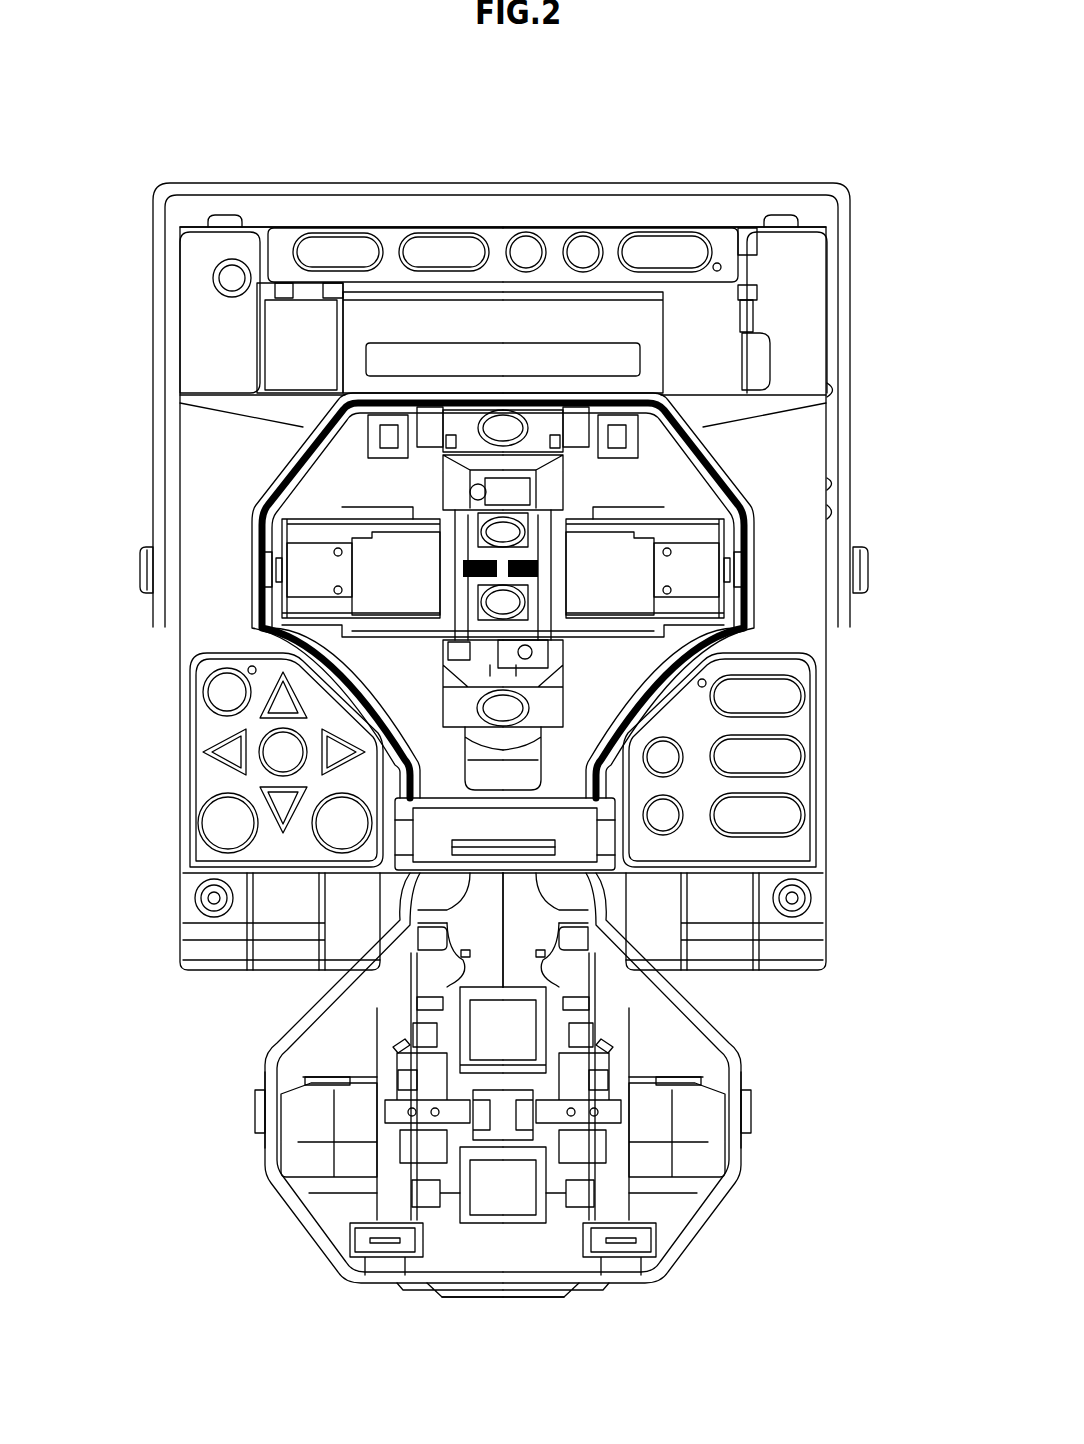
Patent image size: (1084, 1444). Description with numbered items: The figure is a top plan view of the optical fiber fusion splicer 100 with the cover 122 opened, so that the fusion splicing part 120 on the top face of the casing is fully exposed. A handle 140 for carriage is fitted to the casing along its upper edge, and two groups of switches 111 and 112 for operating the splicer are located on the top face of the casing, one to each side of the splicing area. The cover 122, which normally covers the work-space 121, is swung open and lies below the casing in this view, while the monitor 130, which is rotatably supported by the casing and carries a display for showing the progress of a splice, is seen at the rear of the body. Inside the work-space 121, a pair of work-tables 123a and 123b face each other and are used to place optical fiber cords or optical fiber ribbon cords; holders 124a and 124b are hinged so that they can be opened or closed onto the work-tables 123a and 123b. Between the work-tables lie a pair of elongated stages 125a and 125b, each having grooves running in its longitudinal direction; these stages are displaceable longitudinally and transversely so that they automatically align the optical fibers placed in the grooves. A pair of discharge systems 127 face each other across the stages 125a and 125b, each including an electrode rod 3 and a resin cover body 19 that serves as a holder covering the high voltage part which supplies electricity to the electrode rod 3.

The optical fiber fusion splicer 100 is at (572, 150).
The handle 140 is at (843, 183).
The fusion splicing part 120 is at (767, 454).
The work-space 121 is at (719, 440).
The discharge systems 127 is at (519, 465).
The cover body 19 is at (517, 489).
The electrode rods 3 is at (453, 533).
The holder 124a is at (604, 532).
The holder 124b is at (393, 543).
The stage 125a is at (552, 560).
The stage 125b is at (448, 566).
The work-table 123a is at (827, 568).
The work-table 123b is at (302, 568).
The group of switches 111 is at (203, 730).
The group of switches 112 is at (810, 727).
The monitor 130 is at (672, 975).
The cover 122 is at (657, 1283).